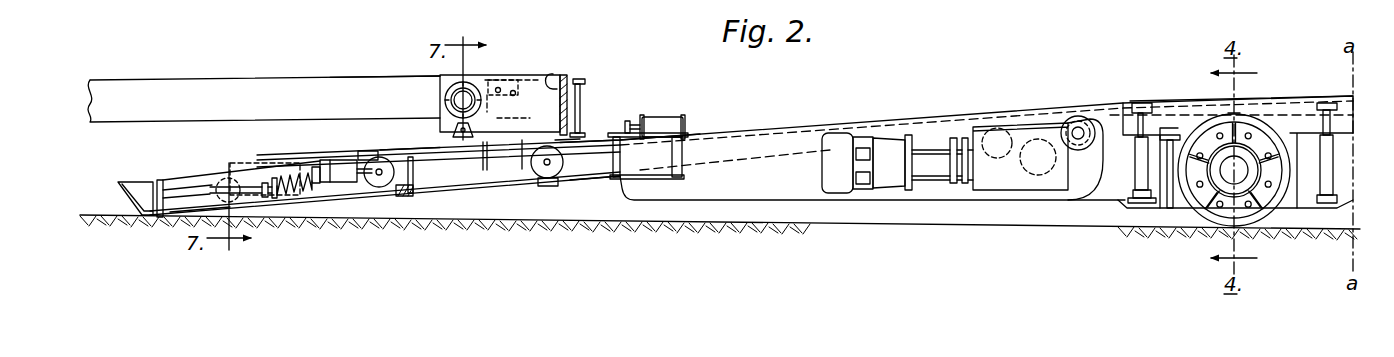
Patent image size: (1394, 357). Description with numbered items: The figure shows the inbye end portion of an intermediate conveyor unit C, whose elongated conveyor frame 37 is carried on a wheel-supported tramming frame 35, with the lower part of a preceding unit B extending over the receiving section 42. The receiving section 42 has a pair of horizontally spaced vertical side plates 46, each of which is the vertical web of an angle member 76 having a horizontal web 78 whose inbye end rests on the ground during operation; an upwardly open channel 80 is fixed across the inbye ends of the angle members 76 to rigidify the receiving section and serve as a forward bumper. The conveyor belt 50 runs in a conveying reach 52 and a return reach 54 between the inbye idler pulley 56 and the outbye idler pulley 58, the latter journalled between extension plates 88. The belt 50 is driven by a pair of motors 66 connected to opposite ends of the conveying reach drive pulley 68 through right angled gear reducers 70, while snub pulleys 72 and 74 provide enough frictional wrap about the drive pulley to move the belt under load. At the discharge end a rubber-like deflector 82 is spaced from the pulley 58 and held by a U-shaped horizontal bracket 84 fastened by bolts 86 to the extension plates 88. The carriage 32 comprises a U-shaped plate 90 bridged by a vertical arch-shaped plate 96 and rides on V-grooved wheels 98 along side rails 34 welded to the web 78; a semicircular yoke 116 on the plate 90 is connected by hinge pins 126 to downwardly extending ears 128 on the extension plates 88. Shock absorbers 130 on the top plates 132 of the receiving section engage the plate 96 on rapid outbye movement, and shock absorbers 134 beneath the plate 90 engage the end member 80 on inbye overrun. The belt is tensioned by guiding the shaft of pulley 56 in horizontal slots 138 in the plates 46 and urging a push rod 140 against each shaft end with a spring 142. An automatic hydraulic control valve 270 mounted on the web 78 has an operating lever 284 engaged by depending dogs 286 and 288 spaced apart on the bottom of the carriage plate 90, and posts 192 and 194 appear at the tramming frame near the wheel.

The boom beam B is at (250, 78).
The conveyor unit C is at (940, 82).
The carriage 32 is at (587, 77).
The side rails 34 is at (592, 178).
The tramming frame 35 is at (1128, 214).
The conveyor frame 37 is at (1174, 93).
The receiving section 42 is at (623, 102).
The side plates 46 is at (791, 189).
The conveyor belt 50 is at (772, 128).
The conveying reach 52 is at (815, 130).
The return reach 54 is at (737, 158).
The inbye idler pulley 56 is at (221, 180).
The outbye idler pulley 58 is at (440, 75).
The motors 66 is at (878, 147).
The conveying reach drive pulley 68 is at (1038, 140).
The right angled gear reducers 70 is at (1015, 186).
The snub pulley 72 is at (972, 127).
The snub pulley 74 is at (1081, 126).
The angle member 76 is at (170, 178).
The horizontal web 78 is at (277, 203).
The upwardly open channel 80 is at (127, 184).
The rubber-like deflector 82 is at (552, 74).
The U-shaped horizontal bracket 84 is at (568, 80).
The bolts 86 is at (500, 82).
The extension plates 88 is at (514, 99).
The U-shaped plate 90 is at (561, 138).
The arch-shaped plate 96 is at (581, 98).
The V-grooved wheels 98 is at (382, 181).
The semicircular yoke 116 is at (372, 77).
The hinge pin 126 is at (465, 137).
The downwardly extending ear 128 is at (401, 137).
The shock absorbers 130 is at (663, 117).
The top plates 132 is at (697, 132).
The shock absorbers 134 is at (328, 164).
The horizontal slots 138 is at (188, 203).
The push rod 140 is at (272, 154).
The spring 142 is at (292, 198).
The jack 192 is at (1163, 170).
The support post 194 is at (1163, 208).
The automatic hydraulic control valve 270 is at (403, 197).
The operating lever 284 is at (420, 184).
The depending dog 286 is at (552, 180).
The depending dog 288 is at (367, 151).